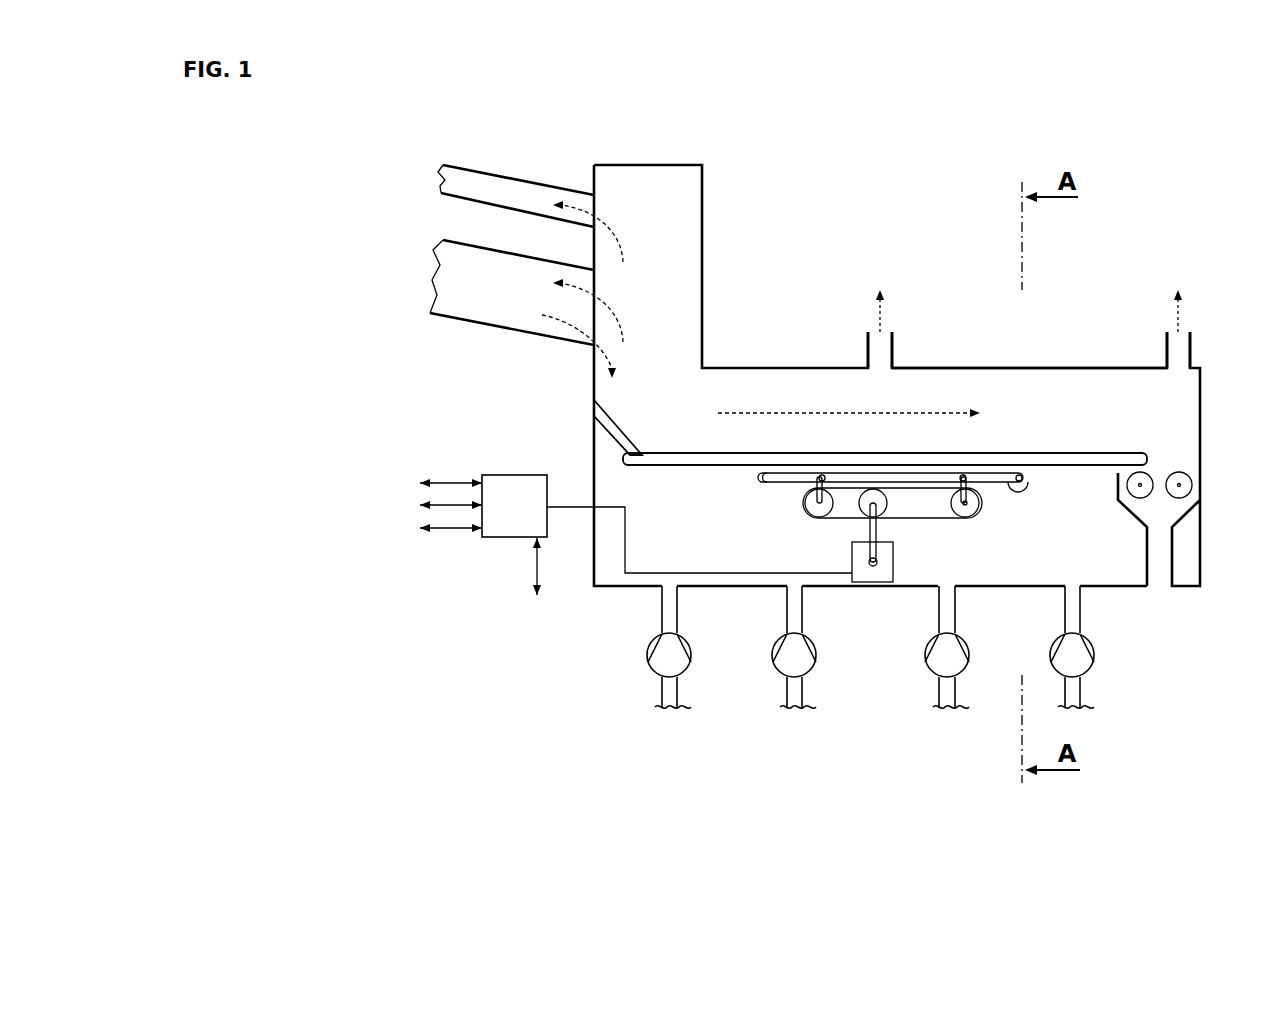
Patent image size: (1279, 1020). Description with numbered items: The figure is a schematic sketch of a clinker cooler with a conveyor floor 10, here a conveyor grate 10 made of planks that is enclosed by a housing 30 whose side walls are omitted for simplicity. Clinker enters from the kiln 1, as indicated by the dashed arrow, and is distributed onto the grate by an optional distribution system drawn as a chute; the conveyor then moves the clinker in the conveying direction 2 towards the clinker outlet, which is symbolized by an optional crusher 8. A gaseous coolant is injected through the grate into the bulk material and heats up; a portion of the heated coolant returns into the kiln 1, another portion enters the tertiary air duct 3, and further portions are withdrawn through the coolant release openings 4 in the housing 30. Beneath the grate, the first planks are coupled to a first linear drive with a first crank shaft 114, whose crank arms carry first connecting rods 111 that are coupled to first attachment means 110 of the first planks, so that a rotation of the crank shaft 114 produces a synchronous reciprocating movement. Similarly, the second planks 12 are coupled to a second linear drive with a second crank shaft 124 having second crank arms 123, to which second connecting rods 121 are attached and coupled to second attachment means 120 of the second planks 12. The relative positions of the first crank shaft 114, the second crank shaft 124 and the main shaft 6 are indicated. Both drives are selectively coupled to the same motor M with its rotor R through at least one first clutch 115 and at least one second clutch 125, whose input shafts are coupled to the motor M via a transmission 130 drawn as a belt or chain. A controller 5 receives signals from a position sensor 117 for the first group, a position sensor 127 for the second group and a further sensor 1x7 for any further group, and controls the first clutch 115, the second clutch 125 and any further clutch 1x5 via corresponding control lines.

The kiln 1 is at (485, 310).
The tertiary air duct 3 is at (500, 188).
The conveying direction 2 is at (849, 402).
The coolant release opening 4 is at (895, 340).
The housing 30 is at (1073, 368).
The conveyor floor 10 is at (1082, 450).
The conveying means of the second group 12 is at (1005, 453).
The crusher 8 is at (1165, 468).
The first attachment means 110 is at (752, 467).
The first connecting rods 111 is at (793, 482).
The first crank shaft 114 is at (828, 508).
The first clutch 115 is at (840, 519).
The second crank arm 123 is at (958, 484).
The second crank shaft 124 is at (963, 512).
The second clutch 125 is at (972, 510).
The second attachment means 120 is at (1027, 481).
The second connecting rods 121 is at (1003, 486).
The part of transmission 130 is at (920, 520).
The main shaft 6 is at (887, 505).
The motor M is at (873, 570).
The rotor R is at (883, 568).
The controller 5 is at (506, 520).
The position sensor of the first group of conveying means 117 is at (430, 484).
The position sensor of the second group of conveying means 127 is at (430, 506).
The further sensor 1x7 is at (430, 529).
The further clutch 1x5 is at (537, 583).